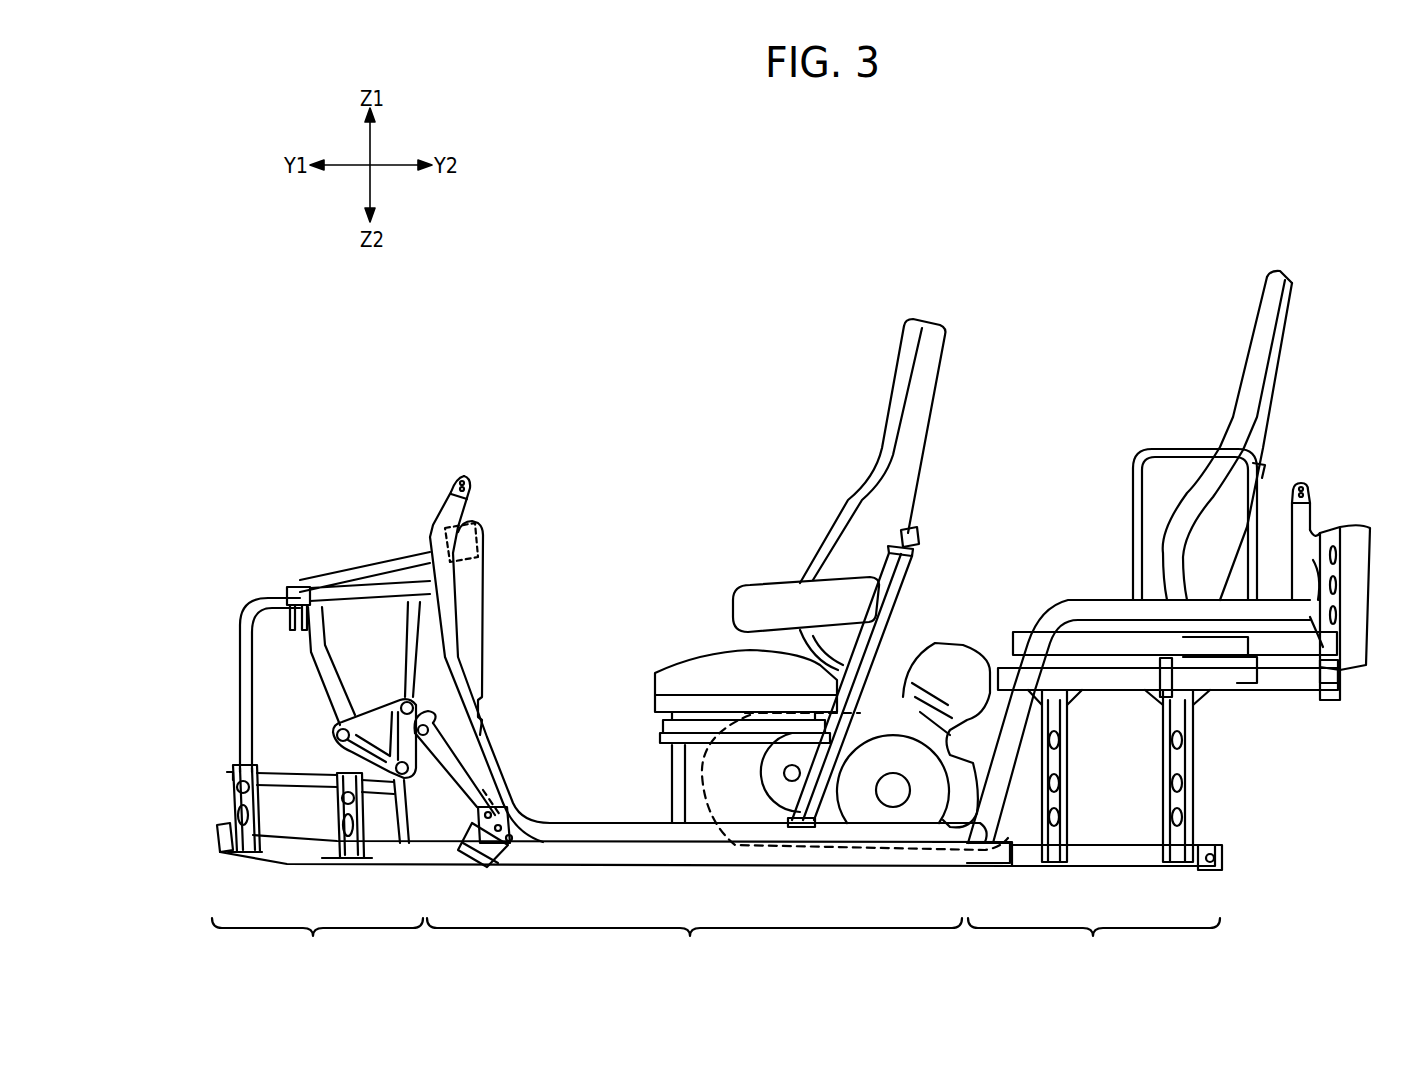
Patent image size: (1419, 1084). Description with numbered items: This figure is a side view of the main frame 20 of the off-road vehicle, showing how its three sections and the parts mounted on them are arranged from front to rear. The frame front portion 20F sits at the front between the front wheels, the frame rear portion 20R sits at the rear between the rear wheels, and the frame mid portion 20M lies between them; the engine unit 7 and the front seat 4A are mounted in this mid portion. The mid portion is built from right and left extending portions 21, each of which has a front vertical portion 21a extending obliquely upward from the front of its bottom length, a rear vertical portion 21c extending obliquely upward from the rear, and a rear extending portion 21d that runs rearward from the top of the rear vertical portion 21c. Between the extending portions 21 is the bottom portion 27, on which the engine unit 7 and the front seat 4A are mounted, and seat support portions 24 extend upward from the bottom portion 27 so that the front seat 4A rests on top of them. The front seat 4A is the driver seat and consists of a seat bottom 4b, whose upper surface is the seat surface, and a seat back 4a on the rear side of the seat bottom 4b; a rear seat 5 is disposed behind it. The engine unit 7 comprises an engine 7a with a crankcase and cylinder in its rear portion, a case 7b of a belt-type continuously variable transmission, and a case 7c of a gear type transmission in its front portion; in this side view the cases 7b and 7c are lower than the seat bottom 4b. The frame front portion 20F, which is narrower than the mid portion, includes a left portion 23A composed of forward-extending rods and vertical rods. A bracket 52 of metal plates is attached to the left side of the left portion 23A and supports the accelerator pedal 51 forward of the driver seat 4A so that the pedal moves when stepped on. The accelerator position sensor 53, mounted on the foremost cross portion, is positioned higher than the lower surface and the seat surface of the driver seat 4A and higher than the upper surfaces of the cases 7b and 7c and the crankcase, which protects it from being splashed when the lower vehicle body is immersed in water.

The main frame 20 is at (285, 492).
The frame front portion 20F is at (317, 942).
The frame mid portion 20M is at (694, 942).
The frame rear portion 20R is at (1094, 942).
The extending portion 21 is at (634, 844).
The front vertical portion 21a is at (447, 643).
The rear vertical portion 21c is at (1013, 707).
The rear extending portion 21d is at (1135, 605).
The left portion 23A is at (242, 655).
The seat support portion 24 is at (672, 770).
The bottom portion 27 is at (566, 852).
The front seat 4A is at (839, 573).
The seat back 4a is at (900, 362).
The seat bottom 4b is at (702, 660).
The rear seat 5 is at (1247, 356).
The engine unit 7 is at (855, 701).
The engine 7a is at (962, 668).
The case of a transmission 7b is at (893, 747).
The case of a transmission 7c is at (773, 710).
The accelerator pedal 51 is at (455, 768).
The bracket 52 is at (370, 720).
The accelerator position sensor 53 is at (485, 548).